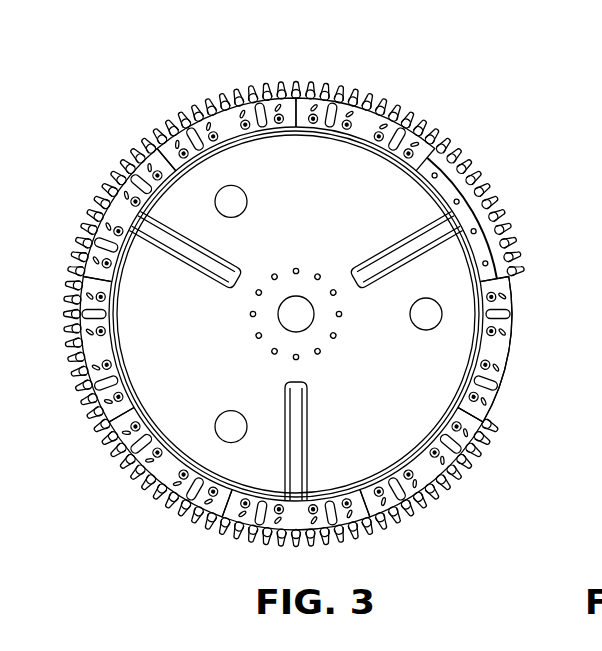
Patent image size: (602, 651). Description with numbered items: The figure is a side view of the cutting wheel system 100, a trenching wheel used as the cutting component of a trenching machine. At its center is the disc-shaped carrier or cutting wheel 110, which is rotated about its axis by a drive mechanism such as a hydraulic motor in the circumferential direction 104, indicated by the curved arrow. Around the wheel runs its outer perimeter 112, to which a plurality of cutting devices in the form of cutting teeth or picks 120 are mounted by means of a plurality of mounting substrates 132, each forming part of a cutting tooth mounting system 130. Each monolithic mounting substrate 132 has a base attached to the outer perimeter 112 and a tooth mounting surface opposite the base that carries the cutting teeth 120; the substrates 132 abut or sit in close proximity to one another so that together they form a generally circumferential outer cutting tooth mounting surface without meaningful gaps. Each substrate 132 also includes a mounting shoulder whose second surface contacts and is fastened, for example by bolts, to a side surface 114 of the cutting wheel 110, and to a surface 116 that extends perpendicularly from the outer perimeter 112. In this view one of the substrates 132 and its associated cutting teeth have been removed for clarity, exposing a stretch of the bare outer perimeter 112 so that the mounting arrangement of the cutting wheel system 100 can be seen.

The cutting wheel system 100 is at (463, 113).
The circumferential direction 104 is at (112, 119).
The cutting wheel 110 is at (398, 417).
The outer perimeter 112 is at (457, 198).
The side surface 114 is at (470, 240).
The surface 116 is at (482, 248).
The cutting teeth 120 is at (515, 283).
The cutting tooth mounting system 130 is at (445, 139).
The mounting substrate 132 is at (362, 130).